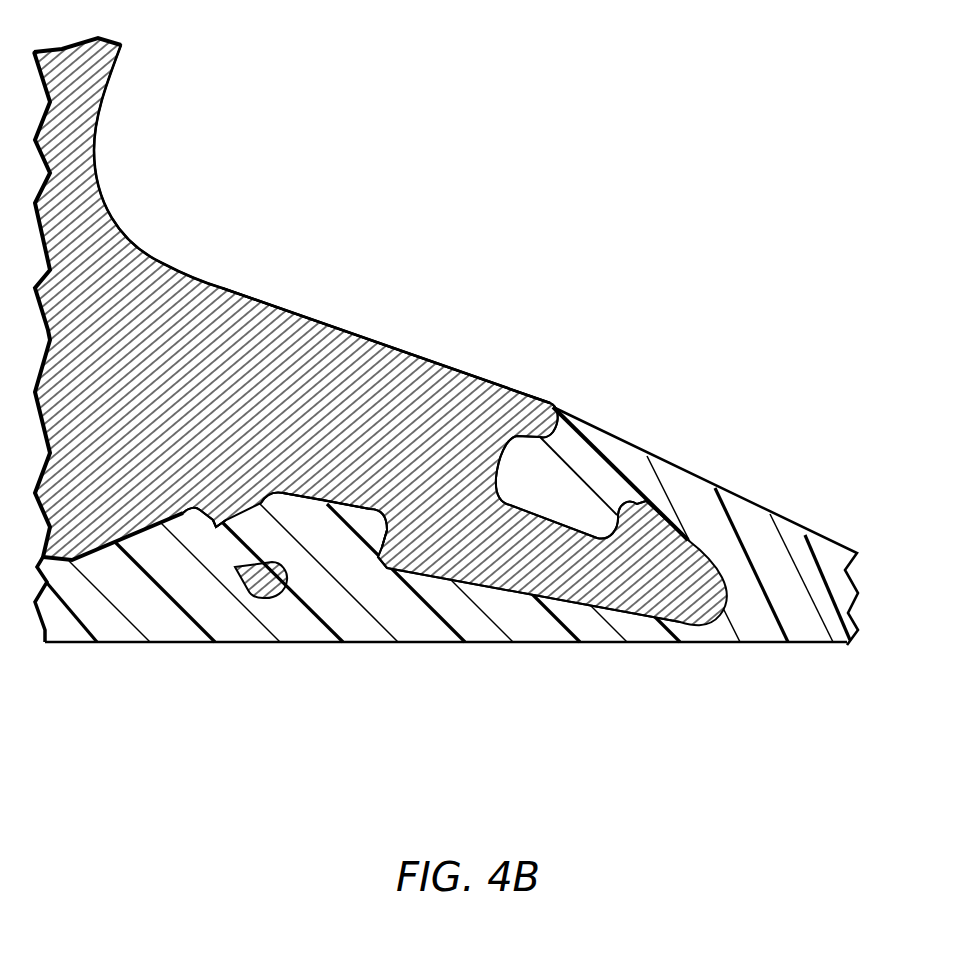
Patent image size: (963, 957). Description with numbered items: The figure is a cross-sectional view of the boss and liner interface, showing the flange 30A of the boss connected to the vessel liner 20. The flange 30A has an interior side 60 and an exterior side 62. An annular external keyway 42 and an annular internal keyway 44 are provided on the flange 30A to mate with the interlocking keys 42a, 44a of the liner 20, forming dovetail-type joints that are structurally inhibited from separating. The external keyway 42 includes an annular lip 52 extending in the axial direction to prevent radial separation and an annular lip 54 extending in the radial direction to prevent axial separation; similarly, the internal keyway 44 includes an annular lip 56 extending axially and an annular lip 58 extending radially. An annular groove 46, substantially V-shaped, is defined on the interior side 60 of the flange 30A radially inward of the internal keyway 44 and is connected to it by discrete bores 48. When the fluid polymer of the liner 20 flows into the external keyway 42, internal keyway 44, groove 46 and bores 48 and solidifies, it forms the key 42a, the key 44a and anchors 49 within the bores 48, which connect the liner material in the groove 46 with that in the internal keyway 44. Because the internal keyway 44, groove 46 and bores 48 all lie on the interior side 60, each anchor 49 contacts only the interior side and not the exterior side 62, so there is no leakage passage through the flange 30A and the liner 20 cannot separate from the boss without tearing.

The liner 20 is at (648, 452).
The flange 30A is at (403, 343).
The external keyway 42 is at (545, 442).
The interlocking key 42a is at (537, 490).
The internal keyway 44 is at (289, 500).
The interlocking key 44a is at (309, 544).
The annular groove 46 is at (121, 548).
The bore 48 is at (233, 500).
The anchor 49 is at (238, 545).
The annular lip 52 is at (638, 504).
The annular lip 54 is at (533, 428).
The annular lip 56 is at (389, 556).
The annular lip 58 is at (260, 590).
The interior side 60 is at (513, 605).
The exterior side 62 is at (328, 315).